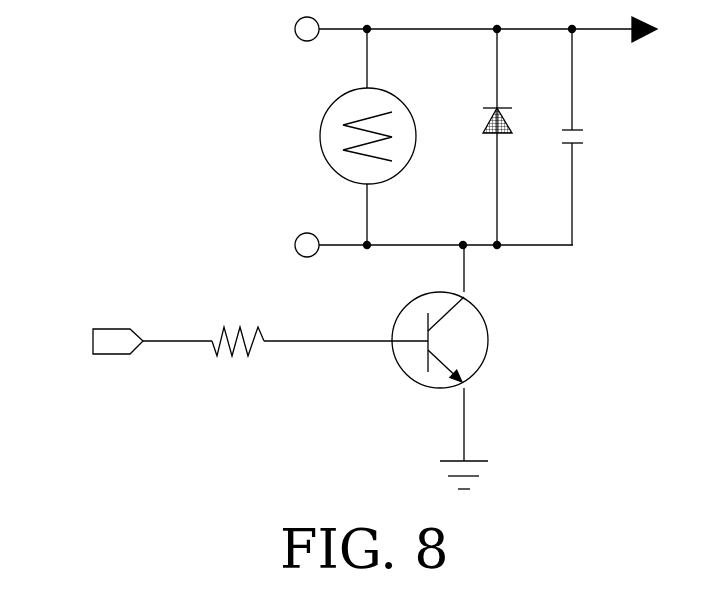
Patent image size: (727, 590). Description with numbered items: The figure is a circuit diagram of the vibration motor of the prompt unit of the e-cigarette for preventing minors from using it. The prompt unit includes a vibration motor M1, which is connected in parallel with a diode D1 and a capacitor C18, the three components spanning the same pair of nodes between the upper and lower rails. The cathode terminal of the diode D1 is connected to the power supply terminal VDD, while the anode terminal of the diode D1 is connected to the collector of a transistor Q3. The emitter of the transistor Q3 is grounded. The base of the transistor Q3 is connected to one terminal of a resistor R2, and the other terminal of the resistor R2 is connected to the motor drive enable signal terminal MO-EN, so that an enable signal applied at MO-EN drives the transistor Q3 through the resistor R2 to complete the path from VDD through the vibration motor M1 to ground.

The vibration motor M1 is at (344, 137).
The diode D1 is at (479, 137).
The capacitor C18 is at (609, 137).
The resistor R2 is at (320, 318).
The transistor Q3 is at (469, 367).
The power supply terminal VDD is at (667, 38).
The motor drive enable signal terminal MO-EN is at (117, 341).